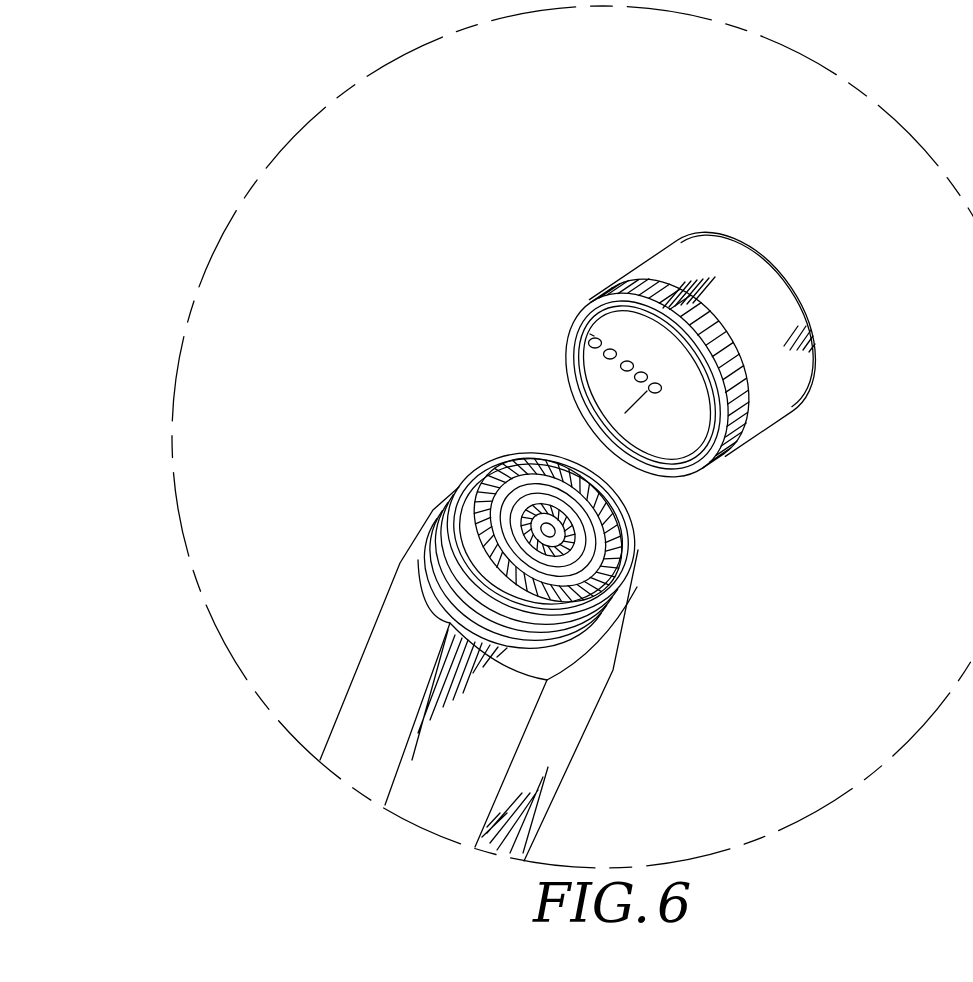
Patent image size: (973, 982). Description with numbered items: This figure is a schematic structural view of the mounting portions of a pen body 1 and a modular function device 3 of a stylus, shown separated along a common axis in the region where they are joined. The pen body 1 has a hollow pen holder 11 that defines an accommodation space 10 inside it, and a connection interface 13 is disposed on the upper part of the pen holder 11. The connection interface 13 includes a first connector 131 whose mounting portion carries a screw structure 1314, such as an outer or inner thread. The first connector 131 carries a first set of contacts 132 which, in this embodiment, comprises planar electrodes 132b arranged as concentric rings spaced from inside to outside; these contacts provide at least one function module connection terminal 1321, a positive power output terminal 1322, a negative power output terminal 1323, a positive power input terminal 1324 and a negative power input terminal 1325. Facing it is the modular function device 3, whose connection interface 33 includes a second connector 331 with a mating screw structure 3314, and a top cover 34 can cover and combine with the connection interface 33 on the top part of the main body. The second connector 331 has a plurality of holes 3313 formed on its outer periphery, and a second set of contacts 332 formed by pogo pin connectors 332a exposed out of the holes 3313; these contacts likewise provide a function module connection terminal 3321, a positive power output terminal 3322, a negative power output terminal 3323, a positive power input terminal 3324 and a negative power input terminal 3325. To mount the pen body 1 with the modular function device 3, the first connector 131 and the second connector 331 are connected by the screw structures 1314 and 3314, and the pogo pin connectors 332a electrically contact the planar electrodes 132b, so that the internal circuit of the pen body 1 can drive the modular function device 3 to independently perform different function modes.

The pen body 1 is at (622, 818).
The accommodation space 10 is at (573, 740).
The pen holder 11 is at (532, 820).
The connection interface 13 is at (744, 553).
The first connector 131 is at (633, 554).
The screw structure 1314 is at (593, 617).
The first set of contacts 132 is at (302, 570).
The planar electrodes 132b is at (480, 455).
The function module connection terminal 1321 is at (543, 530).
The positive power output terminal 1322 is at (525, 530).
The negative power output terminal 1323 is at (507, 528).
The positive power input terminal 1324 is at (488, 515).
The negative power input terminal 1325 is at (473, 483).
The modular function device 3 is at (752, 178).
The connection interface 33 is at (887, 407).
The second connector 331 is at (707, 407).
The holes 3313 is at (628, 362).
The screw structure 3314 is at (688, 466).
The second set of contacts 332 is at (458, 334).
The pogo pin connector 332a is at (591, 320).
The function module connection terminal 3321 is at (653, 387).
The positive power output terminal 3322 is at (640, 377).
The negative power output terminal 3323 is at (627, 368).
The positive power input terminal 3324 is at (607, 353).
The negative power input terminal 3325 is at (590, 343).
The top cover 34 is at (737, 263).